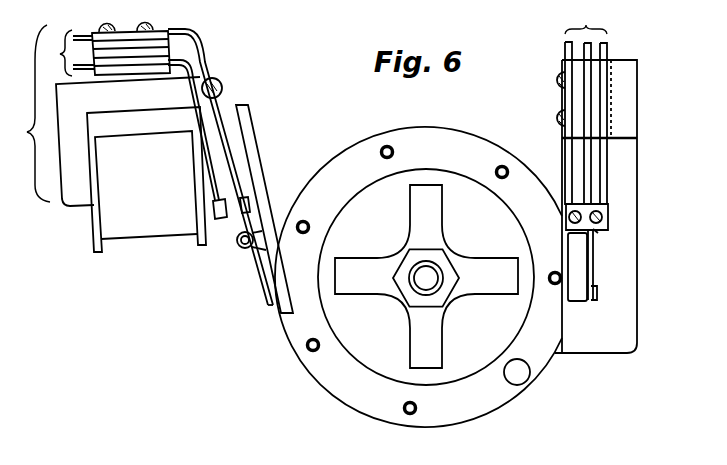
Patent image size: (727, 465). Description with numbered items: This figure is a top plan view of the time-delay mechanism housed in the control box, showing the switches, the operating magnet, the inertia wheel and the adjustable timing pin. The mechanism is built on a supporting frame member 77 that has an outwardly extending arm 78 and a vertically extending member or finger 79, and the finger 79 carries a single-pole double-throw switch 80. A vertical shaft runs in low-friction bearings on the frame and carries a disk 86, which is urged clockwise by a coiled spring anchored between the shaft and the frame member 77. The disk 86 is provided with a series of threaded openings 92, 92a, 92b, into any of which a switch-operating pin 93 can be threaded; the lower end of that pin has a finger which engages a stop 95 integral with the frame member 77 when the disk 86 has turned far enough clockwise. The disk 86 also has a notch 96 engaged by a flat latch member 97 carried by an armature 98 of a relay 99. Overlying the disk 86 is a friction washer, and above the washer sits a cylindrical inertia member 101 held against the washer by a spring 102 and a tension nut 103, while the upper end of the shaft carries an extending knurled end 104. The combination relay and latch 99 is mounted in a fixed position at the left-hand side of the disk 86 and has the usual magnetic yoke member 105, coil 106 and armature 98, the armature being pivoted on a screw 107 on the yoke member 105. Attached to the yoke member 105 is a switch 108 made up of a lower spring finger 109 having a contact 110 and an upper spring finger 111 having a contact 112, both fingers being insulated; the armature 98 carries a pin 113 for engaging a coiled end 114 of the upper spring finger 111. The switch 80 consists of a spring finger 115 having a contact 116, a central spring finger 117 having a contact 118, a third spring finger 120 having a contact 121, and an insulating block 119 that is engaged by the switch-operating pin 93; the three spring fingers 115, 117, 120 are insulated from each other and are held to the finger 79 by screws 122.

The supporting frame member 77 is at (627, 310).
The outwardly extending arm 78 is at (627, 180).
The vertically extending member or finger 79 is at (625, 107).
The single-pole double-throw switch 80 is at (586, 20).
The disk 86 is at (498, 402).
The threaded openings 92 is at (395, 152).
The screw 92a is at (508, 165).
The screw 92b is at (418, 408).
The switch-operating pin 93 is at (525, 378).
The stop 95 is at (594, 301).
The notch 96 is at (283, 316).
The flat latch member 97 is at (256, 168).
The armature 98 is at (224, 143).
The relay 99 is at (25, 113).
The cylindrical inertia member 101 is at (386, 364).
The spring 102 is at (355, 266).
The tension nut 103 is at (407, 291).
The knurled end 104 is at (440, 272).
The magnetic yoke member 105 is at (73, 197).
The coil 106 is at (150, 236).
The screw 107 is at (222, 88).
The switch 108 is at (99, 49).
The lower spring finger 109 is at (183, 68).
The contact 110 is at (222, 220).
The upper spring finger 111 is at (212, 49).
The contact 112 is at (249, 203).
The pin 113 is at (243, 248).
The coiled end 114 is at (258, 251).
The spring finger 115 is at (564, 52).
The contact 116 is at (567, 218).
The central spring finger 117 is at (608, 42).
The contact 118 is at (594, 238).
The insulating block 119 is at (575, 262).
The third spring finger 120 is at (609, 52).
The contact 121 is at (597, 231).
The screws 122 is at (556, 80).